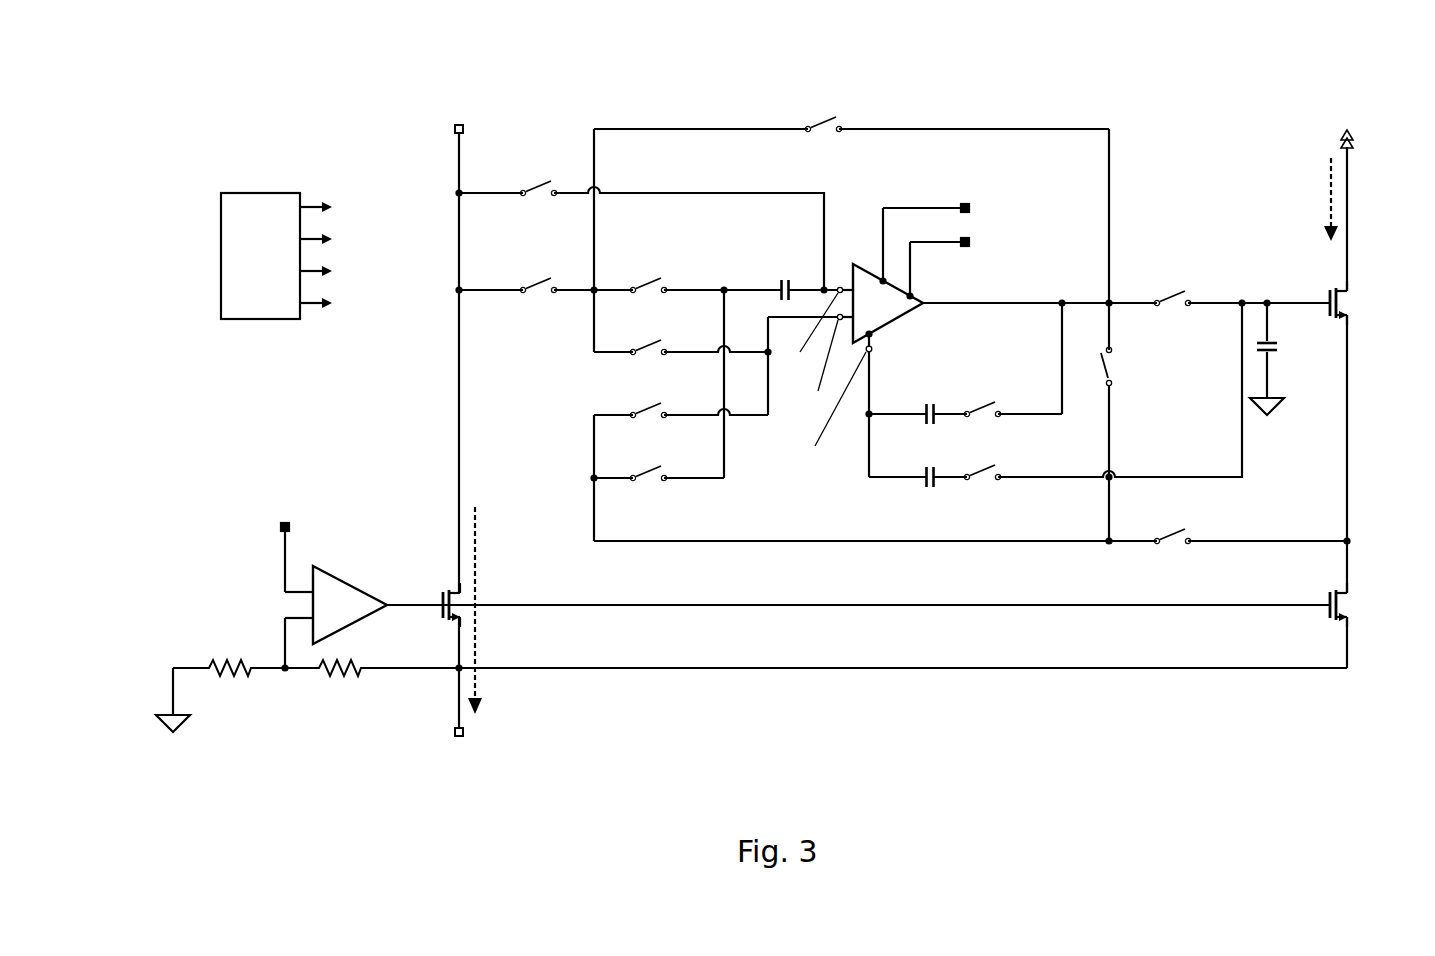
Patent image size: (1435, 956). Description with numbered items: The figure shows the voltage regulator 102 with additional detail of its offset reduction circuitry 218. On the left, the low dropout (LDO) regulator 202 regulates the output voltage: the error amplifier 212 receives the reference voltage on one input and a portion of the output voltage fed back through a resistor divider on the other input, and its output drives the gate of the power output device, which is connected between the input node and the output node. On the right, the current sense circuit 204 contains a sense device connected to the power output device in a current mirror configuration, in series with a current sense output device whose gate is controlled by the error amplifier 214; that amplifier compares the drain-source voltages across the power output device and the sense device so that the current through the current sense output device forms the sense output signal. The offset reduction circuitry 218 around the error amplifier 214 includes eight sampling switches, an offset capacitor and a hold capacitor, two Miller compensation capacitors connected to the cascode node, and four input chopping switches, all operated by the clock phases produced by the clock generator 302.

The voltage regulator 102 is at (1240, 78).
The low dropout (LDO) regulator 202 is at (142, 778).
The current sense circuit 204 is at (1362, 778).
The error amplifier 212 is at (350, 581).
The error amplifier 214 is at (903, 322).
The offset reduction circuitry 218 is at (1147, 185).
The clock generator 302 is at (262, 319).